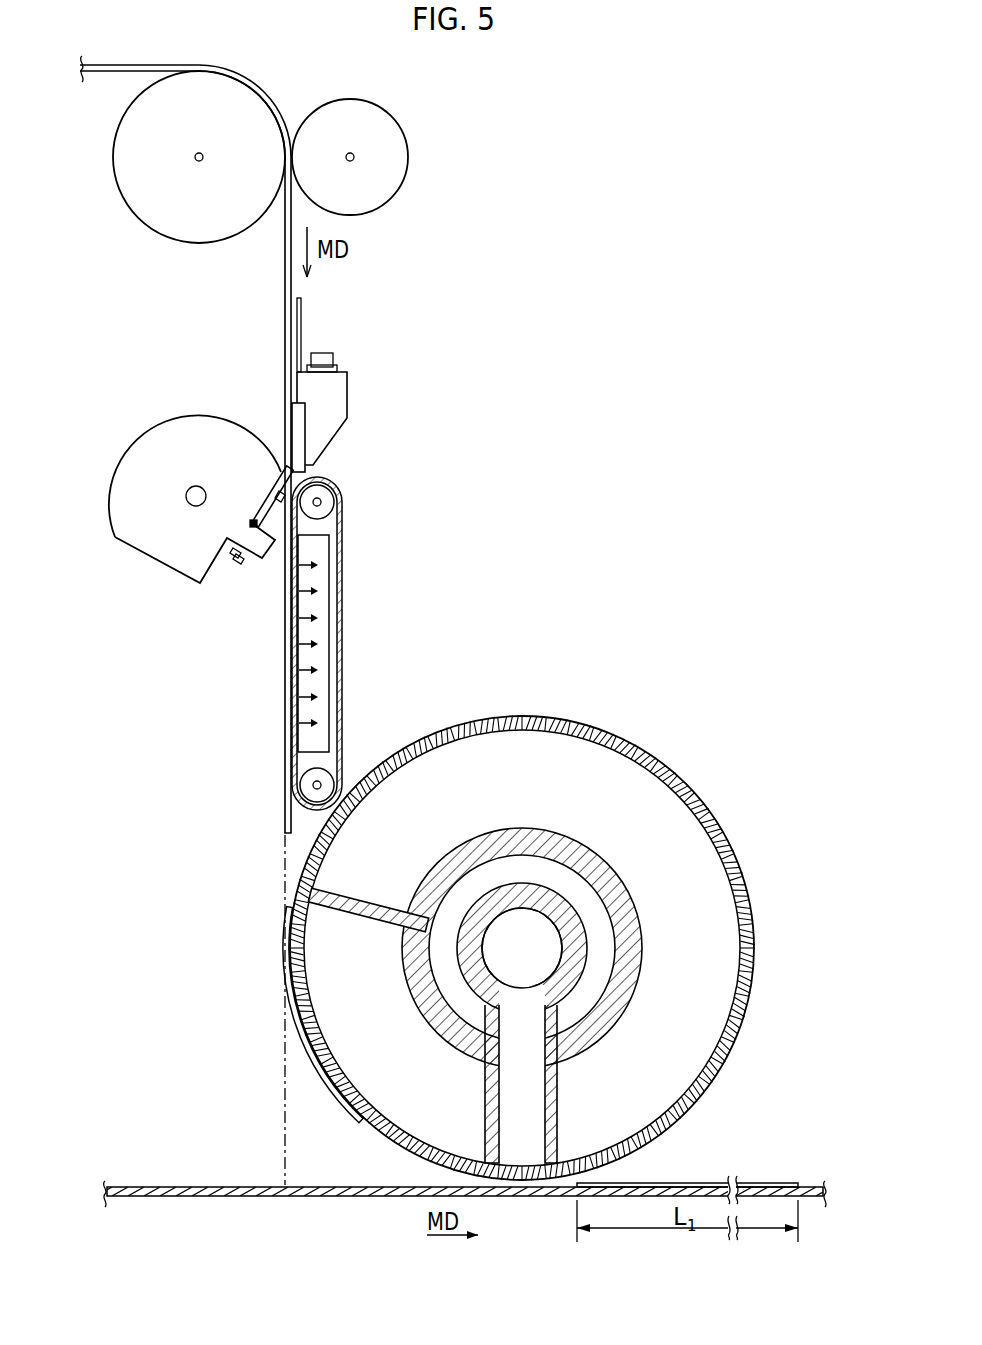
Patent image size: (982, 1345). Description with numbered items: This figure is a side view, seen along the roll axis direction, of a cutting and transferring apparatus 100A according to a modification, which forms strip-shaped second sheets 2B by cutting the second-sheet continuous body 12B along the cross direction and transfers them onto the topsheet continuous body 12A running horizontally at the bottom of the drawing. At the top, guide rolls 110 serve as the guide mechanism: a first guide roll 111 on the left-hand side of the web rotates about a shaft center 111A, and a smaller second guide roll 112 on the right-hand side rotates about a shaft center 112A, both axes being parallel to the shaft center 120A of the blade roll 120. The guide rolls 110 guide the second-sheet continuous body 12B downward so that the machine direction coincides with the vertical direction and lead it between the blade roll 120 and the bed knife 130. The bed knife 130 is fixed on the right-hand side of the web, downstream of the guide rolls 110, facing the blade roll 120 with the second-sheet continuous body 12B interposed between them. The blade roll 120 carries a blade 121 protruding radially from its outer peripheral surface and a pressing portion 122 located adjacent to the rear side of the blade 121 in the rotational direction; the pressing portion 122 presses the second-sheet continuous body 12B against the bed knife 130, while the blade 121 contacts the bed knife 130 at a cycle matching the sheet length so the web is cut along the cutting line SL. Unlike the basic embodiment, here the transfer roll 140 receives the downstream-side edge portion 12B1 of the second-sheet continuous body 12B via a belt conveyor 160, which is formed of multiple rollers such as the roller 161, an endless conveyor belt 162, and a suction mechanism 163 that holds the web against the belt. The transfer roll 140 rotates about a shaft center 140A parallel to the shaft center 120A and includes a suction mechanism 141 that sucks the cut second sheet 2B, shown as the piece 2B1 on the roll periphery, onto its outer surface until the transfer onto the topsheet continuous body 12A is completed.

The cutting and transferring apparatus 100A is at (668, 245).
The guide rolls 110 is at (463, 57).
The first guide roll 111 is at (238, 112).
The shaft center 111A is at (199, 162).
The second guide roll 112 is at (392, 135).
The shaft center 112A is at (354, 157).
The second-sheet continuous body 12B is at (285, 270).
The downstream-side edge portion 12B1 is at (280, 837).
The bed knife 130 is at (300, 423).
The pressing portion 122 is at (284, 448).
The blade roll 120 is at (142, 440).
The shaft center 120A is at (192, 500).
The blade 121 is at (267, 498).
The belt conveyor 160 is at (336, 643).
The roller 161 is at (330, 499).
The endless conveyor belt 162 is at (343, 713).
The suction mechanism 163 is at (323, 633).
The transfer roll 140 is at (531, 948).
The shaft center 140A is at (543, 950).
The suction mechanism 141 is at (630, 1025).
The sheet piece on drum 2B1 is at (288, 912).
The second sheet 2B is at (717, 1183).
The cutting line SL is at (285, 1110).
The topsheet continuous body 12A is at (230, 1187).